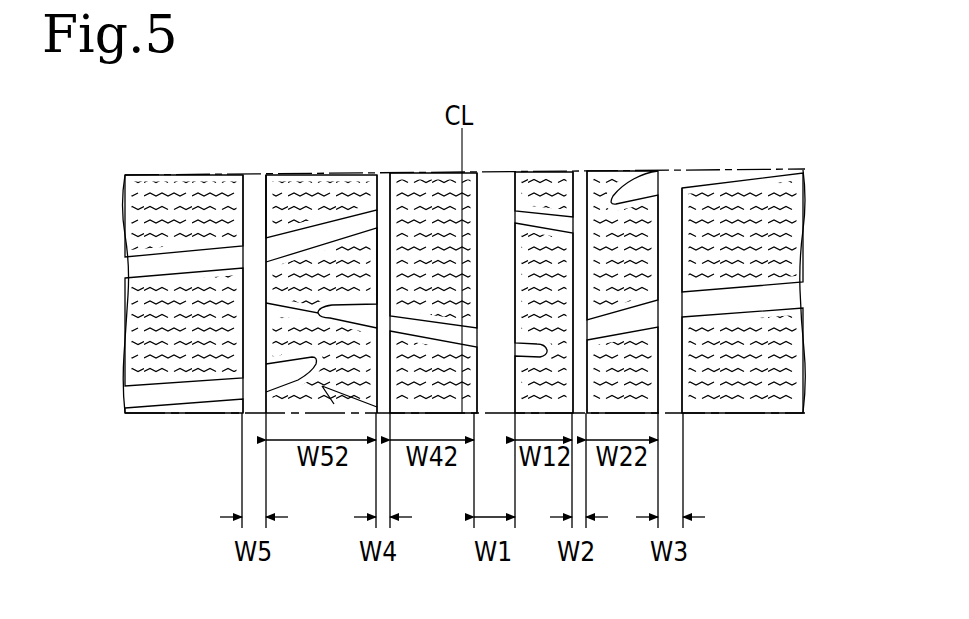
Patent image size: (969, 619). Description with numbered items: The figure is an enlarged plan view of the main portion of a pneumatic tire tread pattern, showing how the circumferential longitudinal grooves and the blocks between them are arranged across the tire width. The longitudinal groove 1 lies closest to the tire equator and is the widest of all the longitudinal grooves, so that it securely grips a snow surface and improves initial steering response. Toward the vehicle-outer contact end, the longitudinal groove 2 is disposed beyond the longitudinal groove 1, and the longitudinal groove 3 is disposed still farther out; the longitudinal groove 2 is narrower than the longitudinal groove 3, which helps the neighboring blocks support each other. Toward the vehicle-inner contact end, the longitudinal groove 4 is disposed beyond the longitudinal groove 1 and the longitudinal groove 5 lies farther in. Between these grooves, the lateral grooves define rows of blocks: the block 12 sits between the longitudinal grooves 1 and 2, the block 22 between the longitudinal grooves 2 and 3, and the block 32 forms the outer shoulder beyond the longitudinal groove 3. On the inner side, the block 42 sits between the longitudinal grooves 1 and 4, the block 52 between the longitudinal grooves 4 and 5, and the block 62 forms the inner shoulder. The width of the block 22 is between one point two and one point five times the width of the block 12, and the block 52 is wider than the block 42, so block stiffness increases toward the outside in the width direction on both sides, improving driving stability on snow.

The longitudinal groove 1 is at (498, 183).
The longitudinal groove 2 is at (580, 187).
The longitudinal groove 3 is at (672, 193).
The longitudinal groove 4 is at (383, 188).
The longitudinal groove 5 is at (255, 188).
The block 12 is at (550, 188).
The block 22 is at (618, 177).
The block 32 is at (755, 190).
The block 42 is at (433, 188).
The block 52 is at (325, 180).
The block 62 is at (178, 175).